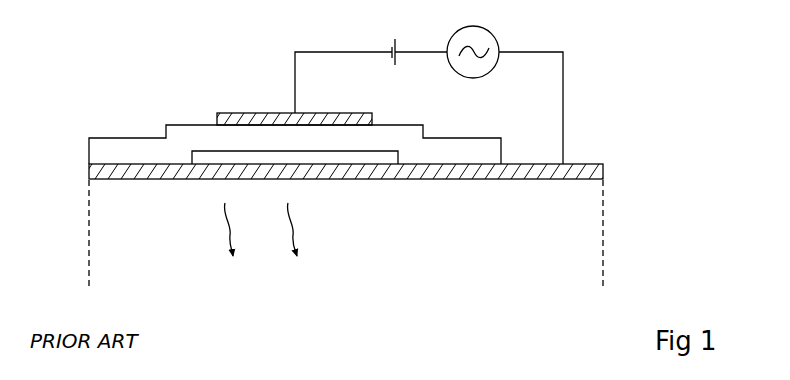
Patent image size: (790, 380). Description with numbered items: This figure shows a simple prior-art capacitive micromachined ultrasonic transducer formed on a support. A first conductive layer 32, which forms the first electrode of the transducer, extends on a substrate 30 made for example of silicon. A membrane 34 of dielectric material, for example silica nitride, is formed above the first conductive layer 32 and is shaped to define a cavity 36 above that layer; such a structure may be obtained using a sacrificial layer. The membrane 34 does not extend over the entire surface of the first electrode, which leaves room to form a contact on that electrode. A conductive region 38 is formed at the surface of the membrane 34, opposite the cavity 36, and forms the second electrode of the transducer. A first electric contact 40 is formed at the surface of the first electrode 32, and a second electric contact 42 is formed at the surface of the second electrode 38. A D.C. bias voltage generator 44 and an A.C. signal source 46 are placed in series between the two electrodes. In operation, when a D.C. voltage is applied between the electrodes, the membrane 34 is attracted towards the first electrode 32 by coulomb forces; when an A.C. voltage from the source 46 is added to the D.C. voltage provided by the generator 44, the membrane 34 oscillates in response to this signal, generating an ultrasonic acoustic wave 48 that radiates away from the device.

The substrate 30 is at (597, 222).
The first conductive layer 32 is at (603, 173).
The membrane 34 is at (110, 147).
The cavity 36 is at (198, 151).
The conductive region 38 is at (233, 113).
The first electric contact 40 is at (563, 108).
The second electric contact 42 is at (293, 80).
The D.C. bias voltage generator 44 is at (404, 45).
The A.C. signal source 46 is at (487, 27).
The ultrasonic acoustic wave 48 is at (293, 230).